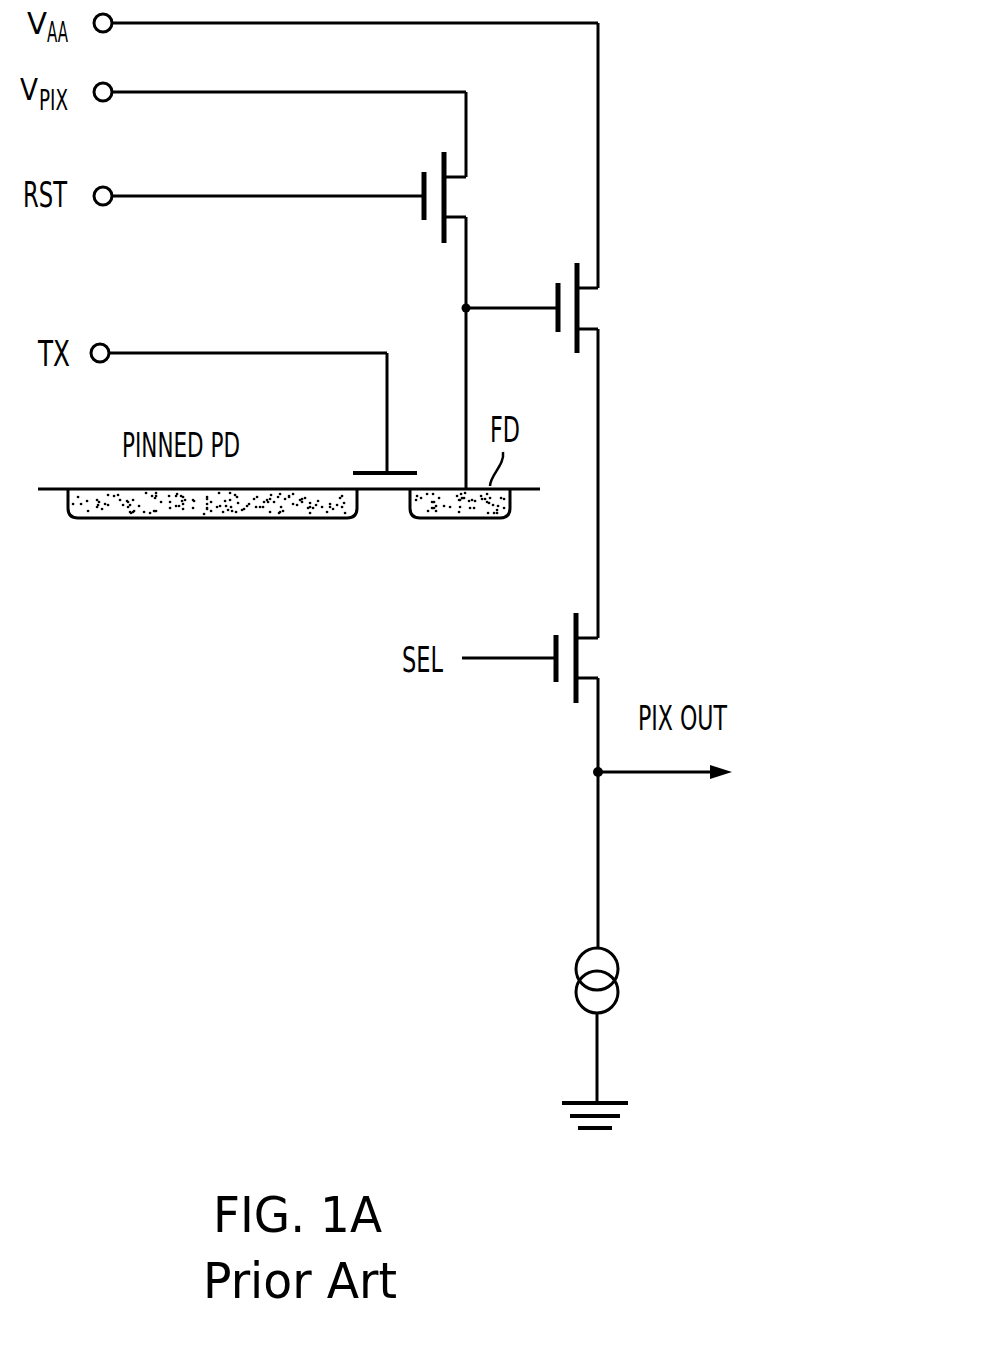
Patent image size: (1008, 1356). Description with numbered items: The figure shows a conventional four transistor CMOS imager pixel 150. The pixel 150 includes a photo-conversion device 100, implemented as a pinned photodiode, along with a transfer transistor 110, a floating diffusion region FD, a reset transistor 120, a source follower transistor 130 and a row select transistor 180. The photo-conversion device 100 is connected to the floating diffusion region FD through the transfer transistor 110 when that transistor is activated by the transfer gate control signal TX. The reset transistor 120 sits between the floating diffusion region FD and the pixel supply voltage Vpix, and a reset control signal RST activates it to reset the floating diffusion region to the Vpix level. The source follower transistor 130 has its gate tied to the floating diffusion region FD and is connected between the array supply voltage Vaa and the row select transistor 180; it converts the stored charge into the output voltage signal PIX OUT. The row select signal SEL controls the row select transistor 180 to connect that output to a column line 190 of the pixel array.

The photo-conversion device 100 is at (187, 518).
The transfer transistor 110 is at (405, 468).
The reset transistor 120 is at (421, 216).
The source follower transistor 130 is at (575, 338).
The pixel 150 is at (704, 122).
The row select transistor 180 is at (573, 692).
The column line 190 is at (673, 775).